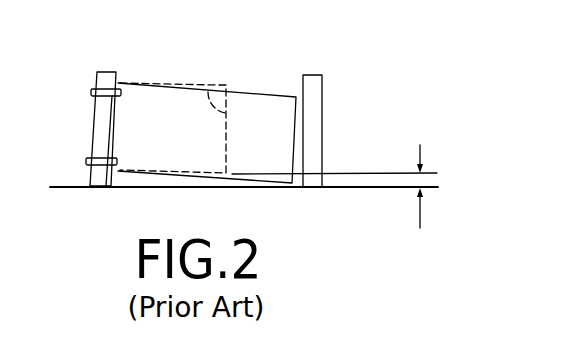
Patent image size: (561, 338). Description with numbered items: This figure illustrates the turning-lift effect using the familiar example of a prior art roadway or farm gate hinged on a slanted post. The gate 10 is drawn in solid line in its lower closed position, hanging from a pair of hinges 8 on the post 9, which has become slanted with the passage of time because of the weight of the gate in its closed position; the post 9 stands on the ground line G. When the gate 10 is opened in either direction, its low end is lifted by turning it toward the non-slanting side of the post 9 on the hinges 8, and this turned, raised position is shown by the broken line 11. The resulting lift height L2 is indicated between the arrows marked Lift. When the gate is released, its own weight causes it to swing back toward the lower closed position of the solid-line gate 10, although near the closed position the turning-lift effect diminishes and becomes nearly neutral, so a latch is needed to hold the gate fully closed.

The hinge 8 is at (91, 92).
The post 9 is at (97, 125).
The gate 10 is at (260, 93).
The broken line 11 is at (217, 85).
The ground line G is at (117, 188).
The lift height L2 is at (425, 181).
The lift arrows Lift is at (420, 228).